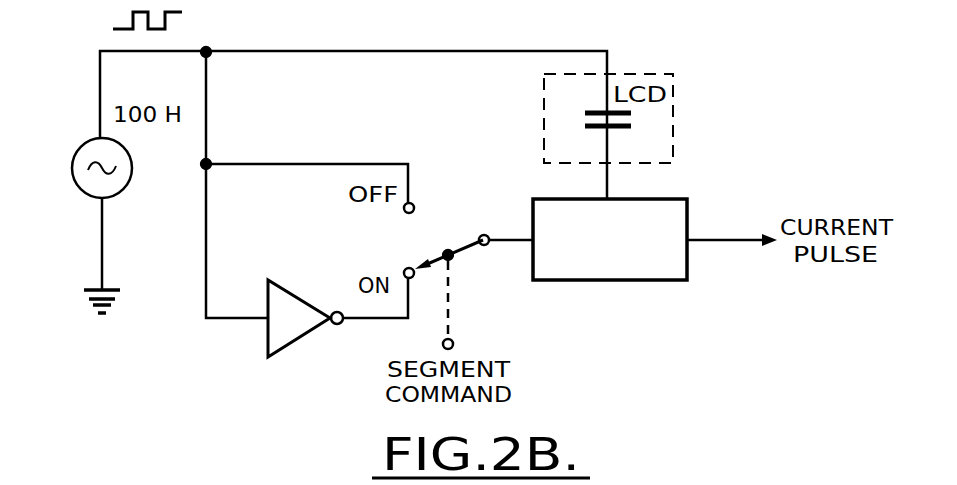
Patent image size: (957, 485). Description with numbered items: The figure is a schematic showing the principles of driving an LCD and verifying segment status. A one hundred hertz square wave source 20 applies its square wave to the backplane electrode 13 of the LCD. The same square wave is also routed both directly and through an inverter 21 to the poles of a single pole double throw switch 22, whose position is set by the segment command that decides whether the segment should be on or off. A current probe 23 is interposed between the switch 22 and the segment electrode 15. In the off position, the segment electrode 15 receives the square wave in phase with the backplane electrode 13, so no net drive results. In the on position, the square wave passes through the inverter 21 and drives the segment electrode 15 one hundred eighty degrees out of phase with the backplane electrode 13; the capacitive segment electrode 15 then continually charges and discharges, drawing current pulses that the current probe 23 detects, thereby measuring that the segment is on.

The backplane electrode 13 is at (600, 111).
The segment electrode 15 is at (622, 129).
The square wave source 20 is at (80, 152).
The inverter 21 is at (304, 299).
The single pole double throw switch 22 is at (472, 272).
The current probe 23 is at (690, 218).